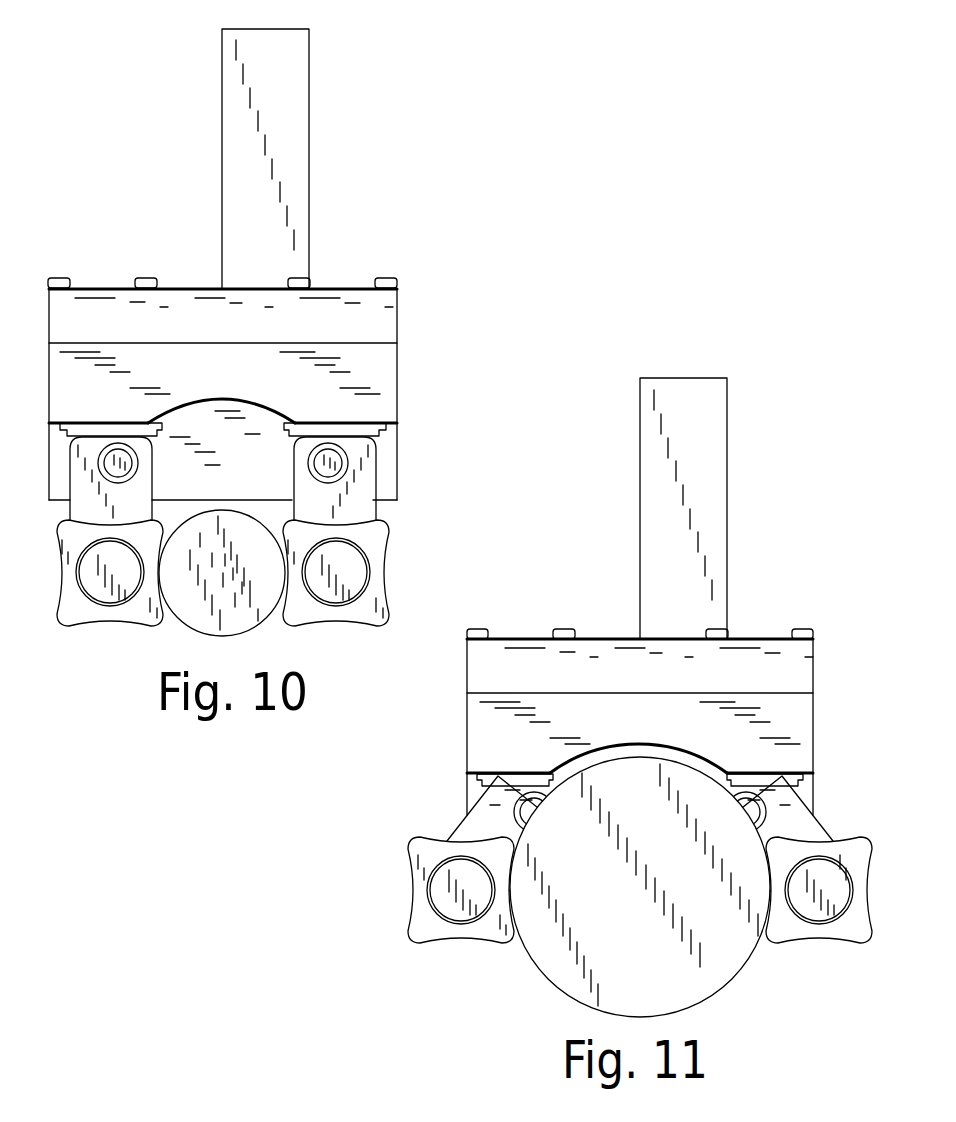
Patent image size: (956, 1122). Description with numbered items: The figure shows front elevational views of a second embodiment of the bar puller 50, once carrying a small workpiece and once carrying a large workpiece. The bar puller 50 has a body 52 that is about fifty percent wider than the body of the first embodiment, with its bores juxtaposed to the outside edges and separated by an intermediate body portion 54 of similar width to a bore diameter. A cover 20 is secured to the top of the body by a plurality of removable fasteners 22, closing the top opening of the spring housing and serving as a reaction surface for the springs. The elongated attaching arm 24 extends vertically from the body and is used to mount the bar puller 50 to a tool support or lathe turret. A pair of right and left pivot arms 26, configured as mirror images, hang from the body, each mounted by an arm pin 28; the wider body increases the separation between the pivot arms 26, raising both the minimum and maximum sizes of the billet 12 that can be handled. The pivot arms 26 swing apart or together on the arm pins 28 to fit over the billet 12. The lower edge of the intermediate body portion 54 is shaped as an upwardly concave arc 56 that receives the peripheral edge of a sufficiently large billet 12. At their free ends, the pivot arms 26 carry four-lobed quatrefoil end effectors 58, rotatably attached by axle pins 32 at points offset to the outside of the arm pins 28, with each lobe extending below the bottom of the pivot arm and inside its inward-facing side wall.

In FIG. 10, the billet 12 is at (200, 614).
In FIG. 11, the billet 12 is at (570, 968).
In FIG. 10, the cover 20 is at (392, 307).
In FIG. 11, the cover 20 is at (812, 671).
In FIG. 10, the removable fasteners 22 is at (146, 277).
In FIG. 10, the elongated attaching arm 24 is at (304, 119).
In FIG. 11, the elongated attaching arm 24 is at (478, 628).
In FIG. 10, the pivot arms 26 is at (95, 504).
In FIG. 11, the pivot arms 26 is at (478, 830).
In FIG. 10, the arm pin 28 is at (135, 466).
In FIG. 11, the arm pin 28 is at (538, 813).
In FIG. 10, the axle pin 32 is at (90, 578).
In FIG. 11, the axle pin 32 is at (437, 890).
In FIG. 10, the bar puller 50 is at (184, 214).
In FIG. 11, the bar puller 50 is at (595, 545).
In FIG. 10, the body 52 is at (392, 372).
In FIG. 11, the body 52 is at (812, 725).
In FIG. 10, the intermediate body portion 54 is at (135, 357).
In FIG. 11, the intermediate body portion 54 is at (548, 712).
In FIG. 10, the upwardly concave arc 56 is at (221, 398).
In FIG. 11, the upwardly concave arc 56 is at (632, 747).
In FIG. 10, the end effectors 58 is at (80, 614).
In FIG. 11, the end effectors 58 is at (430, 937).